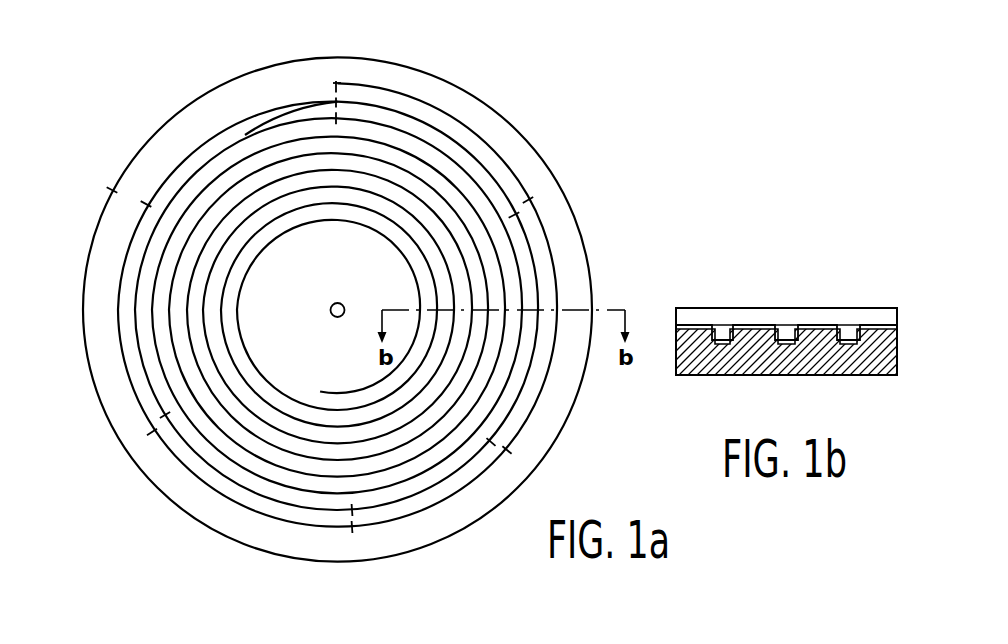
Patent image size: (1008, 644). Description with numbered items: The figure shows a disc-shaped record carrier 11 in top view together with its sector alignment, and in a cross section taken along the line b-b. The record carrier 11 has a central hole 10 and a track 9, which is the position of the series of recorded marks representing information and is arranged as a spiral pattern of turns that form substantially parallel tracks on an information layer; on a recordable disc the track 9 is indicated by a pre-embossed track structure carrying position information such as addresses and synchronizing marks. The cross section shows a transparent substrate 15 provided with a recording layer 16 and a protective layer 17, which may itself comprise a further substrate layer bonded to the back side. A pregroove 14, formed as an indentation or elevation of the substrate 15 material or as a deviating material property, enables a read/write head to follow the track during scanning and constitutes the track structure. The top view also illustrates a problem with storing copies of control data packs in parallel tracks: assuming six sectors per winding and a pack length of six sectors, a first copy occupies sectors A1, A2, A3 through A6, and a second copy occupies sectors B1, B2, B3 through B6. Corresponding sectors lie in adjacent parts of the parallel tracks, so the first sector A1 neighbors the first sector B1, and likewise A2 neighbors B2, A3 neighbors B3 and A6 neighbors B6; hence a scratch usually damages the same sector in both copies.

In FIG. 1a, the track 9 is at (197, 143).
In FIG. 1a, the central hole 10 is at (337, 303).
In FIG. 1a, the record carrier 11 is at (572, 146).
In FIG. 1b, the record carrier 11 is at (680, 281).
In FIG. 1b, the pregroove 14 is at (784, 338).
In FIG. 1b, the substrate 15 is at (698, 365).
In FIG. 1b, the recording layer 16 is at (870, 323).
In FIG. 1b, the protective layer 17 is at (782, 316).
In FIG. 1a, the first sector of the first copy A1 is at (245, 135).
In FIG. 1a, the first sector of the second copy B1 is at (278, 105).
In FIG. 1a, the second sector of the first copy A2 is at (143, 380).
In FIG. 1a, the second sector of the second copy B2 is at (122, 362).
In FIG. 1a, the third sector of the first copy A3 is at (243, 492).
In FIG. 1a, the third sector of the second copy B3 is at (278, 520).
In FIG. 1a, the sixth sector of the first copy A6 is at (472, 155).
In FIG. 1a, the sixth sector of the second copy B6 is at (447, 117).